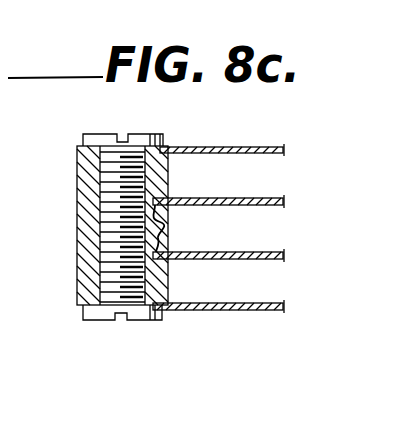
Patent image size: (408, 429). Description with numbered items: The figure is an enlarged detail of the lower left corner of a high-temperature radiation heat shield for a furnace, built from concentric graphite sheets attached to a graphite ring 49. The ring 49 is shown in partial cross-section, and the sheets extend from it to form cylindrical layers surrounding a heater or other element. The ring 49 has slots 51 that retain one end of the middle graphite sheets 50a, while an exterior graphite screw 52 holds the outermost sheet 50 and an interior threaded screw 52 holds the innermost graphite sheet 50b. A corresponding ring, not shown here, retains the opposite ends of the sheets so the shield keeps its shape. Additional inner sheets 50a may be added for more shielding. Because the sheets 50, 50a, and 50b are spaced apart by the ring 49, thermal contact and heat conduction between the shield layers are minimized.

The graphite ring 49 is at (78, 230).
The outermost graphite sheet 50 is at (240, 303).
The middle graphite sheets 50a is at (240, 198).
The innermost graphite sheet 50b is at (240, 147).
The slots 51 is at (170, 224).
The graphite screw 52 is at (90, 134).